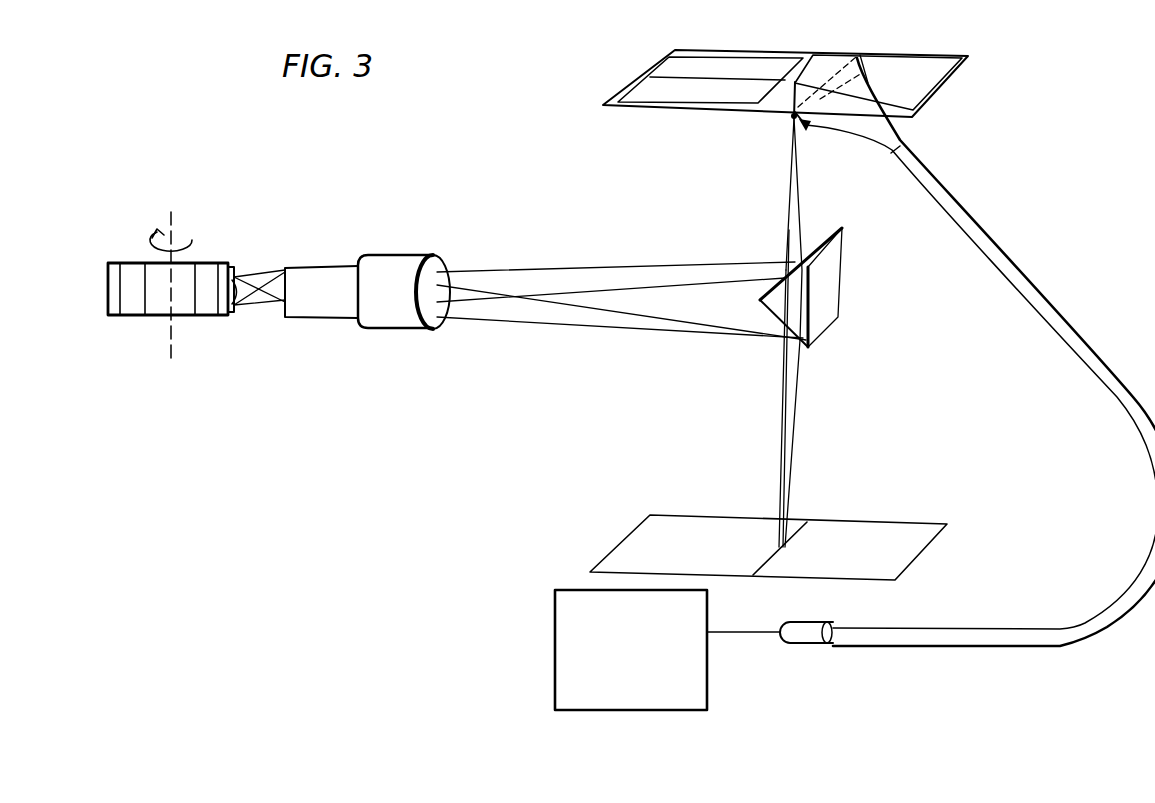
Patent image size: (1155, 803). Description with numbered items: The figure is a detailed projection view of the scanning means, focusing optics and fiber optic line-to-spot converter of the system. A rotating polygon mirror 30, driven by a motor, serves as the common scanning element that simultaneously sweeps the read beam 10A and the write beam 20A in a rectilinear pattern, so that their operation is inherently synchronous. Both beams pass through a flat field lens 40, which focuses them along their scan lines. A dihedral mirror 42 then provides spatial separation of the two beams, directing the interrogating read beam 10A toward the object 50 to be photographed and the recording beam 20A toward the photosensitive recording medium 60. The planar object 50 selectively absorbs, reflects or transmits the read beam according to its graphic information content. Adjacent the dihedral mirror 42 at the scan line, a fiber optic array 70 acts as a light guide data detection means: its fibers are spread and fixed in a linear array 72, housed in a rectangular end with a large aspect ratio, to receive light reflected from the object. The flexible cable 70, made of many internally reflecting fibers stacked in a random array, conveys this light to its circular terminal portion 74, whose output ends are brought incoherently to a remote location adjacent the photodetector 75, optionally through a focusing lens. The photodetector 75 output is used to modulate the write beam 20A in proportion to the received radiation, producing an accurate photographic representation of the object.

The bright narrow beam of radiant energy 10A is at (790, 142).
The second beam of radiant energy 20A is at (786, 486).
The rotating polygon mirror 30 is at (110, 316).
The flat field lens 40 is at (398, 310).
The dihedral mirror 42 is at (827, 325).
The object to be photographed 50 is at (676, 50).
The photosensitive recording medium 60 is at (933, 537).
The fiber optic array 70 is at (1003, 253).
The linear array of fibers 72 is at (808, 128).
The terminal portion 74 is at (803, 622).
The photodetector 75 is at (566, 626).